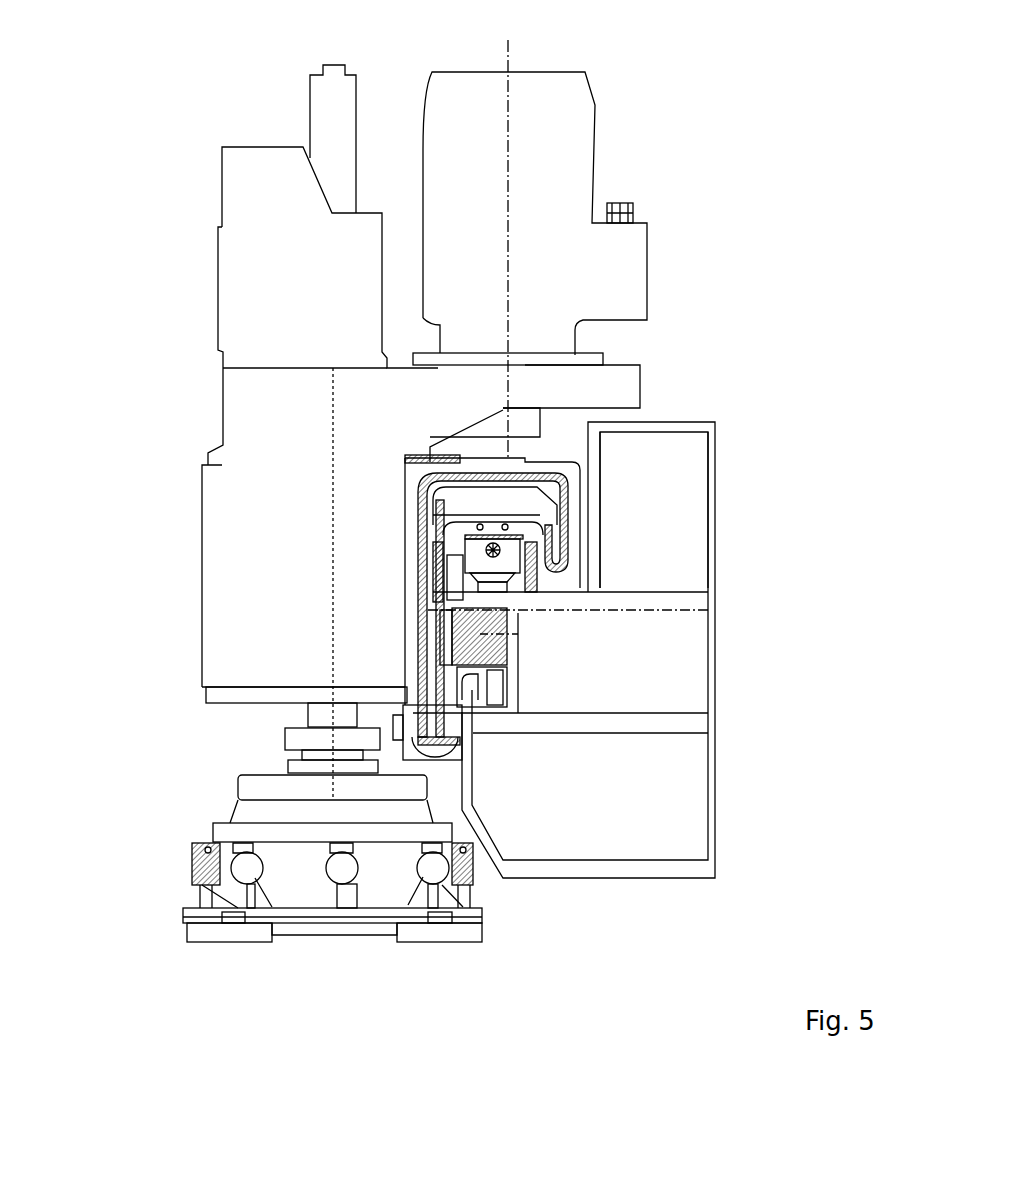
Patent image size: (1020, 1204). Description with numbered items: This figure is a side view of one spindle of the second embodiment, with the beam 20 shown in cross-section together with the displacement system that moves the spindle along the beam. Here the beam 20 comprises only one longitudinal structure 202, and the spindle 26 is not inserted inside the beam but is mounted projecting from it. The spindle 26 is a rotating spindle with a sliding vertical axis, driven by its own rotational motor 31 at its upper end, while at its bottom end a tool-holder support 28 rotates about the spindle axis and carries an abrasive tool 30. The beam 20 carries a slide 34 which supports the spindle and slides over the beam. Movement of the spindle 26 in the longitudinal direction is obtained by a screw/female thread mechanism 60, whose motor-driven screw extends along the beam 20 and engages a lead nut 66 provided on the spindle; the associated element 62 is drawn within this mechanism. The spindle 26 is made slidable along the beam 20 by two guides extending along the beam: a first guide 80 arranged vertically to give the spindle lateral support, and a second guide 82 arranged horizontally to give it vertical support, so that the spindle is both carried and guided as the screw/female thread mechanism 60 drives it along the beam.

The beam 20 is at (725, 778).
The spindle 26 is at (206, 580).
The tool-holder support 28 is at (240, 813).
The abrasive tool 30 is at (433, 935).
The rotational motor 31 is at (587, 122).
The slide 34 is at (633, 393).
The screw/female thread mechanism 60 is at (517, 642).
The sensor element 62 is at (522, 648).
The lead nut 66 is at (493, 630).
The first guide 80 is at (504, 688).
The second guide 82 is at (488, 595).
The longitudinal structure 202 is at (680, 500).